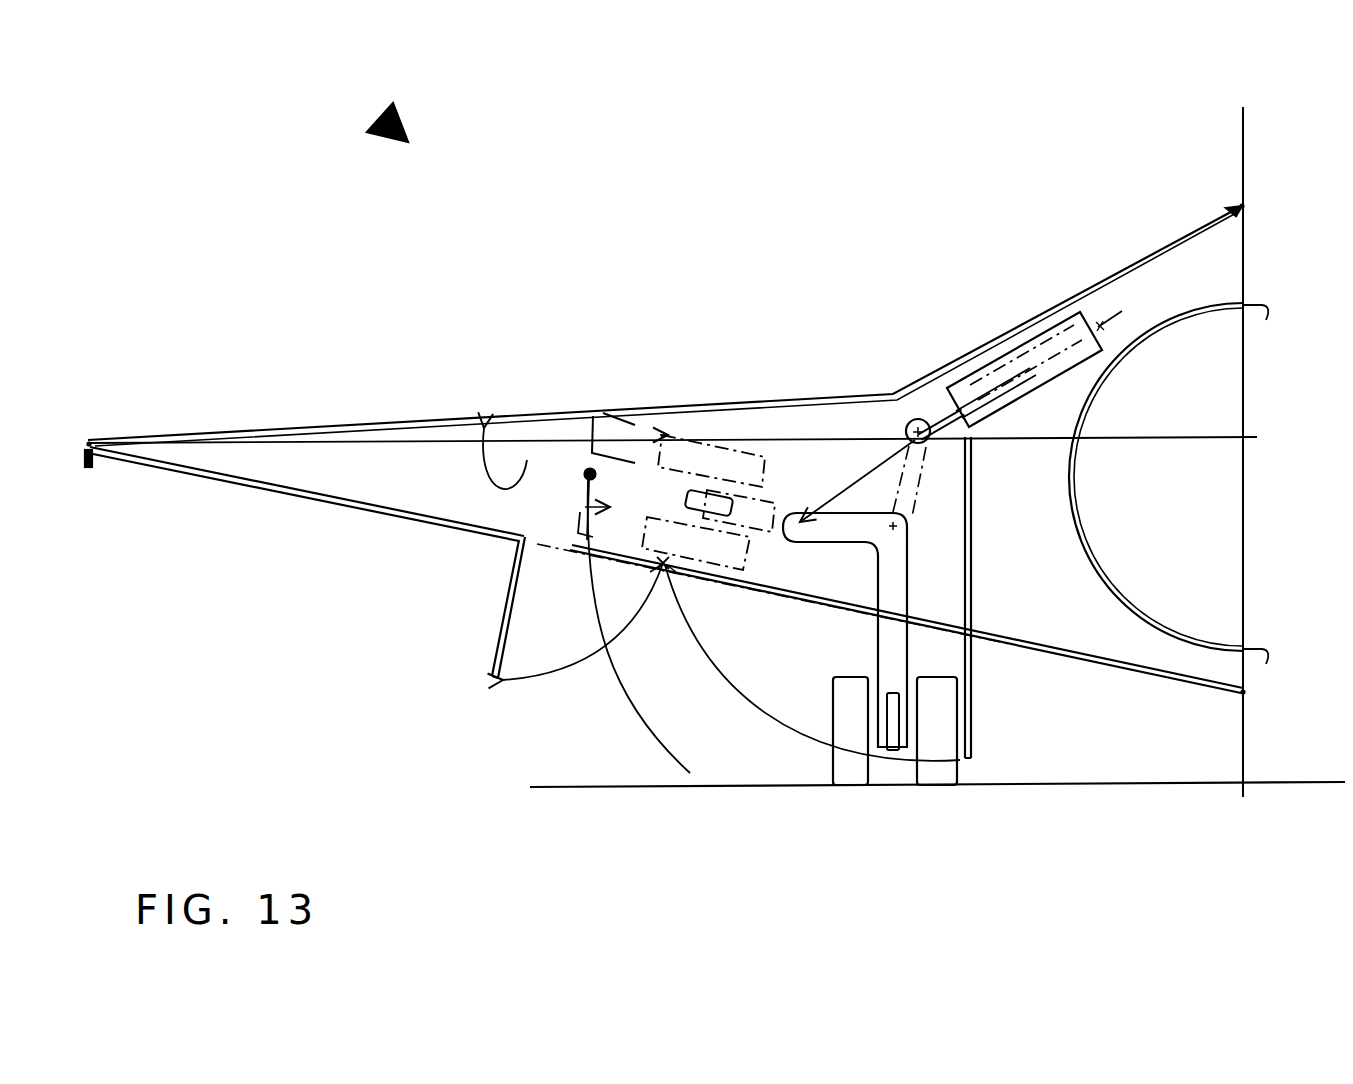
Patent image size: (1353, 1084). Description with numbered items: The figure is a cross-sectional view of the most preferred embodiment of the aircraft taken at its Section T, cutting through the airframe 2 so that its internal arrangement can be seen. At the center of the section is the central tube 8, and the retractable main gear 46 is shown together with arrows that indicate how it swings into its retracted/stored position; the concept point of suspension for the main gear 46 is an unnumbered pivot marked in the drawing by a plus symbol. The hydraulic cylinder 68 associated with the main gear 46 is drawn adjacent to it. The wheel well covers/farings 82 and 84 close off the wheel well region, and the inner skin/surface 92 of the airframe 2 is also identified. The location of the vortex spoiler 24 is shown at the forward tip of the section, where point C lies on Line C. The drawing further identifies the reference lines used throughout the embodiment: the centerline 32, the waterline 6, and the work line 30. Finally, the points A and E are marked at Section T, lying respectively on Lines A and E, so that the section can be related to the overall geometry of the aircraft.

The airframe 2 is at (380, 122).
The waterline 6 is at (548, 794).
The central tube 8 is at (1216, 658).
The vortex spoiler 24 is at (87, 474).
The work line 30 is at (362, 436).
The centerline 32 is at (1249, 248).
The retractable main gear 46 is at (924, 806).
The hydraulic cylinder 68 is at (1033, 345).
The wheel well cover/faring 82 is at (498, 636).
The wheel well cover/faring 84 is at (975, 690).
The inner skin/surface 92 is at (505, 526).
The point A is at (1235, 200).
The point C is at (93, 430).
The point E is at (1251, 700).